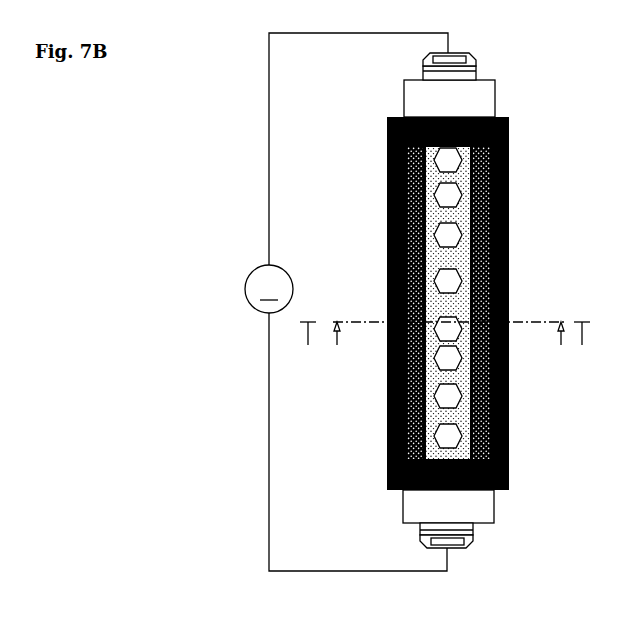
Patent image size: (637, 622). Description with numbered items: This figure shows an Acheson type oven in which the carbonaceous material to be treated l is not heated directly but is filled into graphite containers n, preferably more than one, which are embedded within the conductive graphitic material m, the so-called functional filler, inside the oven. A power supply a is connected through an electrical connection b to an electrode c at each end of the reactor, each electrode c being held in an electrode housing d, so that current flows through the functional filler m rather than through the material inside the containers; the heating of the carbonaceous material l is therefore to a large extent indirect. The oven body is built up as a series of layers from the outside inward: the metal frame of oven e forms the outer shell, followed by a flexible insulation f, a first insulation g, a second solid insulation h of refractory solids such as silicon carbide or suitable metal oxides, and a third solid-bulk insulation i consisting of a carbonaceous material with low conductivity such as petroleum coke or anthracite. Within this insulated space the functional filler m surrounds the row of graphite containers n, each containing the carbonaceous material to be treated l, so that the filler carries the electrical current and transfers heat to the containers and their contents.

The power supply a is at (246, 272).
The electrical connection b is at (464, 54).
The electrode c is at (480, 70).
The electrode housing d is at (488, 95).
The metal frame of oven e is at (512, 114).
The flexible insulation f is at (509, 126).
The first insulation g is at (510, 148).
The second solid insulation h is at (500, 182).
The third solid-bulk insulation i is at (488, 203).
The carbonaceous material to be treated l is at (509, 257).
The conductive graphitic material m is at (509, 285).
The graphite container n is at (462, 354).